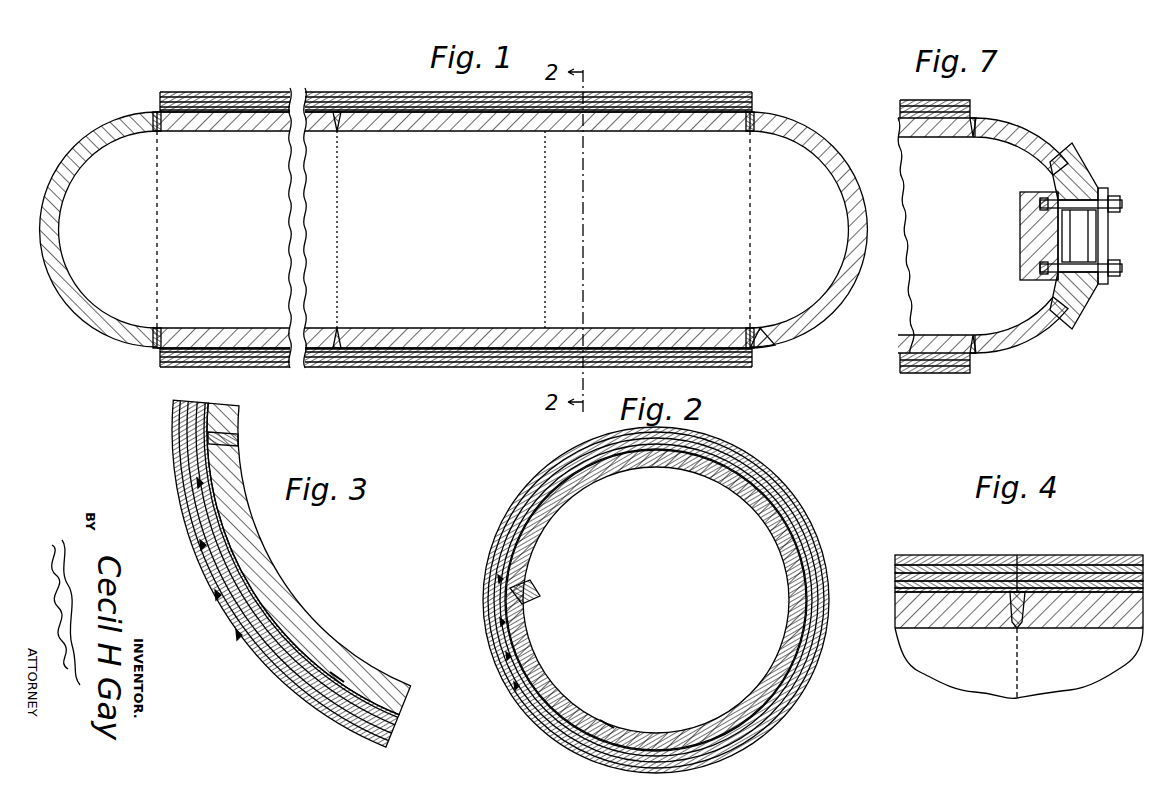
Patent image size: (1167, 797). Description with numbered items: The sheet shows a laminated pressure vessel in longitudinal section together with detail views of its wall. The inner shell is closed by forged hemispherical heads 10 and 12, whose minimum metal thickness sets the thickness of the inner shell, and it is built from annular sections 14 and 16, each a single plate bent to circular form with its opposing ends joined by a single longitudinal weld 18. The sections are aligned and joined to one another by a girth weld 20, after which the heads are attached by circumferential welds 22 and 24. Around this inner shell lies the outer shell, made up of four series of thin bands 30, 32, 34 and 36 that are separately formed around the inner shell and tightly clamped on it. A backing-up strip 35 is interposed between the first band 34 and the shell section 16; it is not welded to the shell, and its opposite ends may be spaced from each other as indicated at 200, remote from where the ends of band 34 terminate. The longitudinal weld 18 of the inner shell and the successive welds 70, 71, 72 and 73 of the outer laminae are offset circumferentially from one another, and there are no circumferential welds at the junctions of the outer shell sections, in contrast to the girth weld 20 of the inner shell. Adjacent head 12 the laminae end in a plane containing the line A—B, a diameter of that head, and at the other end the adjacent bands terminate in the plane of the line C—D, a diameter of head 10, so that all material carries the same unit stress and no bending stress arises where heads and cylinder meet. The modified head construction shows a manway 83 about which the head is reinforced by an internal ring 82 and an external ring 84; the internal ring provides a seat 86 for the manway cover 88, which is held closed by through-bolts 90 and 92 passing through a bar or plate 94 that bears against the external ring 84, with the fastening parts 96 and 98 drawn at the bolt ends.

In FIG. 1, the hemispherical head 10 is at (105, 335).
In FIG. 1, the hemispherical head 12 is at (812, 126).
In FIG. 7, the hemispherical head 12 is at (1010, 128).
In FIG. 1, the annular section 14 is at (232, 130).
In FIG. 3, the annular section 14 is at (266, 576).
In FIG. 4, the annular section 14 is at (946, 630).
In FIG. 1, the annular section 16 is at (594, 132).
In FIG. 7, the annular section 16 is at (934, 134).
In FIG. 2, the annular section 16 is at (652, 468).
In FIG. 4, the annular section 16 is at (1070, 630).
In FIG. 2, the longitudinal weld 18 is at (530, 582).
In FIG. 3, the longitudinal weld 18 is at (240, 436).
In FIG. 1, the girth weld 20 is at (358, 328).
In FIG. 4, the girth weld 20 is at (1002, 630).
In FIG. 1, the circumferential weld 22 is at (178, 328).
In FIG. 1, the circumferential weld 24 is at (786, 344).
In FIG. 7, the circumferential weld 24 is at (998, 344).
In FIG. 1, the band 30 is at (414, 367).
In FIG. 2, the band 30 is at (813, 562).
In FIG. 3, the band 30 is at (398, 724).
In FIG. 4, the band 30 is at (998, 584).
In FIG. 1, the band 32 is at (443, 367).
In FIG. 2, the band 32 is at (808, 534).
In FIG. 3, the band 32 is at (396, 730).
In FIG. 4, the band 32 is at (978, 576).
In FIG. 1, the band 34 is at (472, 367).
In FIG. 2, the band 34 is at (796, 504).
In FIG. 3, the band 34 is at (392, 738).
In FIG. 4, the band 34 is at (958, 568).
In FIG. 1, the backing-up strip 35 is at (387, 367).
In FIG. 2, the backing-up strip 35 is at (816, 590).
In FIG. 3, the backing-up strip 35 is at (396, 722).
In FIG. 4, the backing-up strip 35 is at (1008, 590).
In FIG. 1, the band 36 is at (508, 367).
In FIG. 7, the band 36 is at (935, 236).
In FIG. 2, the band 36 is at (786, 484).
In FIG. 3, the band 36 is at (382, 744).
In FIG. 4, the band 36 is at (918, 556).
In FIG. 2, the weld 70 is at (496, 580).
In FIG. 3, the weld 70 is at (196, 484).
In FIG. 2, the weld 71 is at (498, 622).
In FIG. 3, the weld 71 is at (198, 544).
In FIG. 2, the weld 72 is at (506, 656).
In FIG. 3, the weld 72 is at (214, 592).
In FIG. 2, the weld 73 is at (514, 684).
In FIG. 3, the weld 73 is at (238, 636).
In FIG. 2, the spacing of strip ends 200 is at (612, 726).
In FIG. 3, the spacing of strip ends 200 is at (340, 676).
In FIG. 7, the internal ring 82 is at (1036, 184).
In FIG. 7, the manway 83 is at (1075, 250).
In FIG. 7, the external ring 84 is at (1070, 155).
In FIG. 7, the seat 86 is at (1086, 186).
In FIG. 7, the manway cover 88 is at (1020, 236).
In FIG. 7, the through-bolt 90 is at (1125, 211).
In FIG. 7, the through-bolt 92 is at (1118, 272).
In FIG. 7, the bar or plate 94 is at (1110, 238).
In FIG. 7, the nut 96 is at (1114, 208).
In FIG. 7, the washer 98 is at (1104, 282).
In FIG. 1, the point on line A—B A is at (752, 112).
In FIG. 1, the point on line A— B is at (752, 350).
In FIG. 1, the point on line C—D C is at (157, 112).
In FIG. 1, the point on line C— D is at (155, 350).